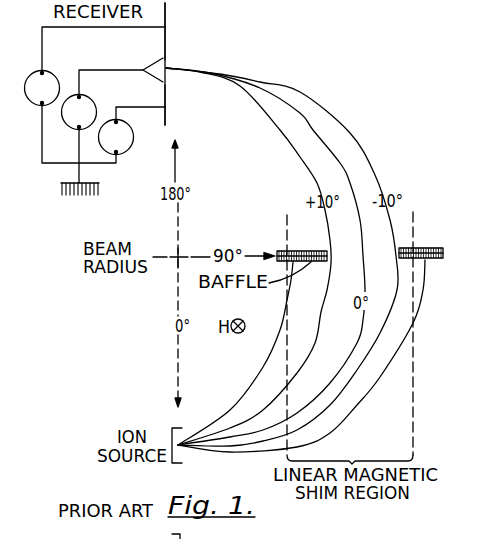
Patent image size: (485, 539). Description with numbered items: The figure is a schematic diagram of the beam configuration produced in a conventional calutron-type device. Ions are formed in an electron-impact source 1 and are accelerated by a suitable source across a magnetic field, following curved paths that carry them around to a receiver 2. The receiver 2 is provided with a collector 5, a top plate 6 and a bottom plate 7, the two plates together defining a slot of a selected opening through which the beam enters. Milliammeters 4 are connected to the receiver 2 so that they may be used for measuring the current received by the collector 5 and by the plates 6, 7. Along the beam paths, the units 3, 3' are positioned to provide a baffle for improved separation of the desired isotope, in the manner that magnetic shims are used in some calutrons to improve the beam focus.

The electron-impact source 1 is at (180, 463).
The receiver 2 is at (115, 53).
The baffle unit 3 is at (302, 244).
The baffle unit 3' is at (421, 242).
The milliammeters 4 is at (114, 153).
The collector 5 is at (148, 74).
The top plate 6 is at (166, 31).
The bottom plate 7 is at (166, 97).